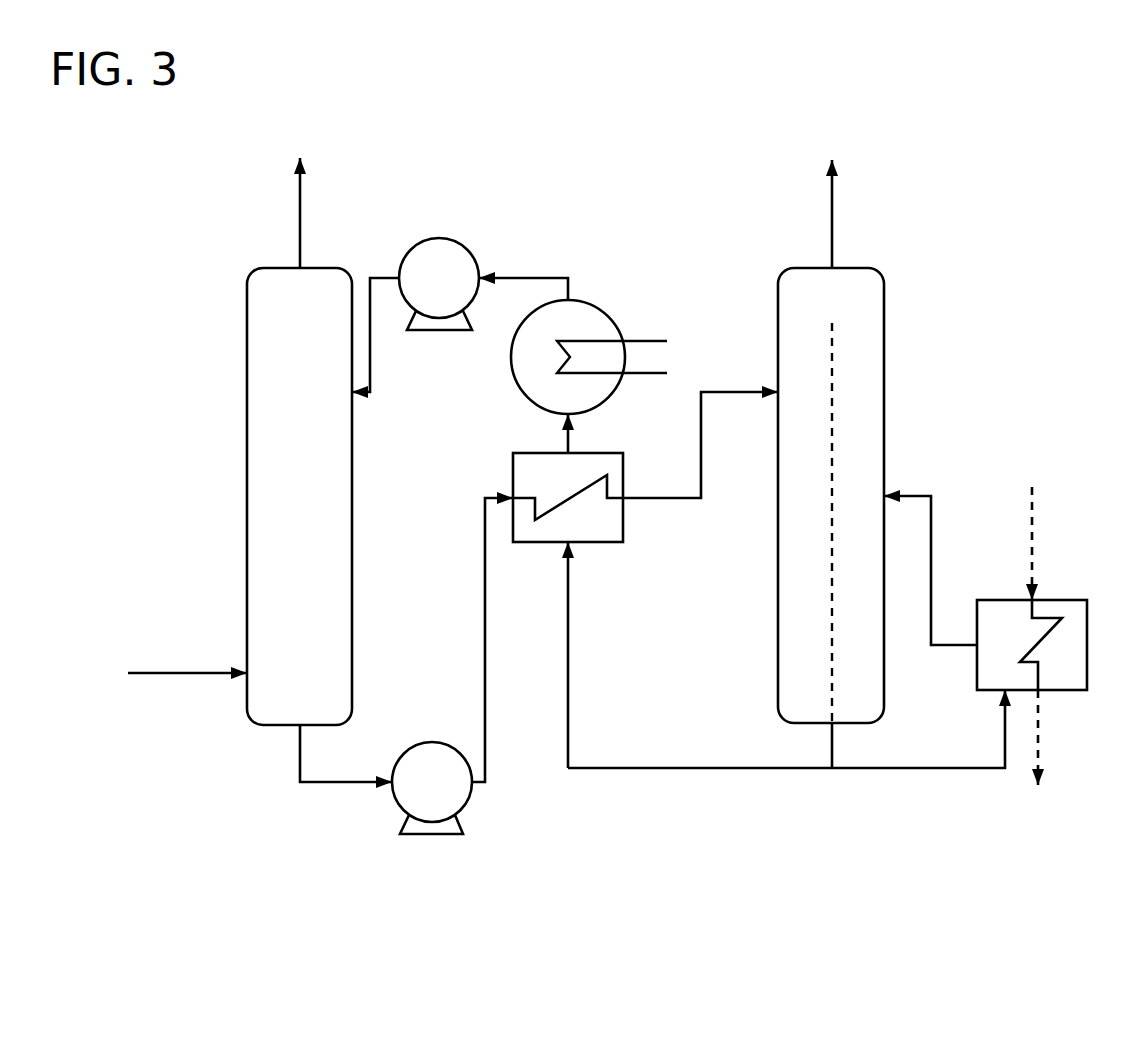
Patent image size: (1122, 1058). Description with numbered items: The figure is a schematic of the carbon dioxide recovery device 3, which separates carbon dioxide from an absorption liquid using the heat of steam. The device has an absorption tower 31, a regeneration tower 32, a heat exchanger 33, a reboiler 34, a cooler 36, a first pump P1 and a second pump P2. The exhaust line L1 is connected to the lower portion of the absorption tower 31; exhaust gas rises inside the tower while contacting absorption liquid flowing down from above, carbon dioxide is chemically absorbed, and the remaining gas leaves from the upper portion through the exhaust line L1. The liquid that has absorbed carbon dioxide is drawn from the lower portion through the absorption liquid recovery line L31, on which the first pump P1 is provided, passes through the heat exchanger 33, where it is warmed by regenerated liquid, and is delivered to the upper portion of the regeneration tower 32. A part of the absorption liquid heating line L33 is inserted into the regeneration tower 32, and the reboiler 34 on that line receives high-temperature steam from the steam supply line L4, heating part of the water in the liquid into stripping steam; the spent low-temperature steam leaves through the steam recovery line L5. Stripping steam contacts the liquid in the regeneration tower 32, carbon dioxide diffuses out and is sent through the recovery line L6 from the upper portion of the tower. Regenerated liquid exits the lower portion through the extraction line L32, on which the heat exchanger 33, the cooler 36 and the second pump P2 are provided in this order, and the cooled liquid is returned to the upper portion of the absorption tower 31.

The carbon dioxide recovery device 3 is at (175, 186).
The absorption tower 31 is at (258, 358).
The regeneration tower 32 is at (884, 340).
The heat exchanger 33 is at (613, 543).
The reboiler 34 is at (1068, 600).
The cooler 36 is at (583, 300).
The first pump P1 is at (430, 835).
The second pump P2 is at (461, 238).
The exhaust line L1 is at (300, 218).
The steam supply line L4 is at (1030, 537).
The steam recovery line L5 is at (1040, 745).
The recovery line L6 is at (832, 215).
The absorption liquid recovery line L31 is at (485, 600).
The extraction line L32 is at (568, 678).
The absorption liquid heating line L33 is at (920, 770).